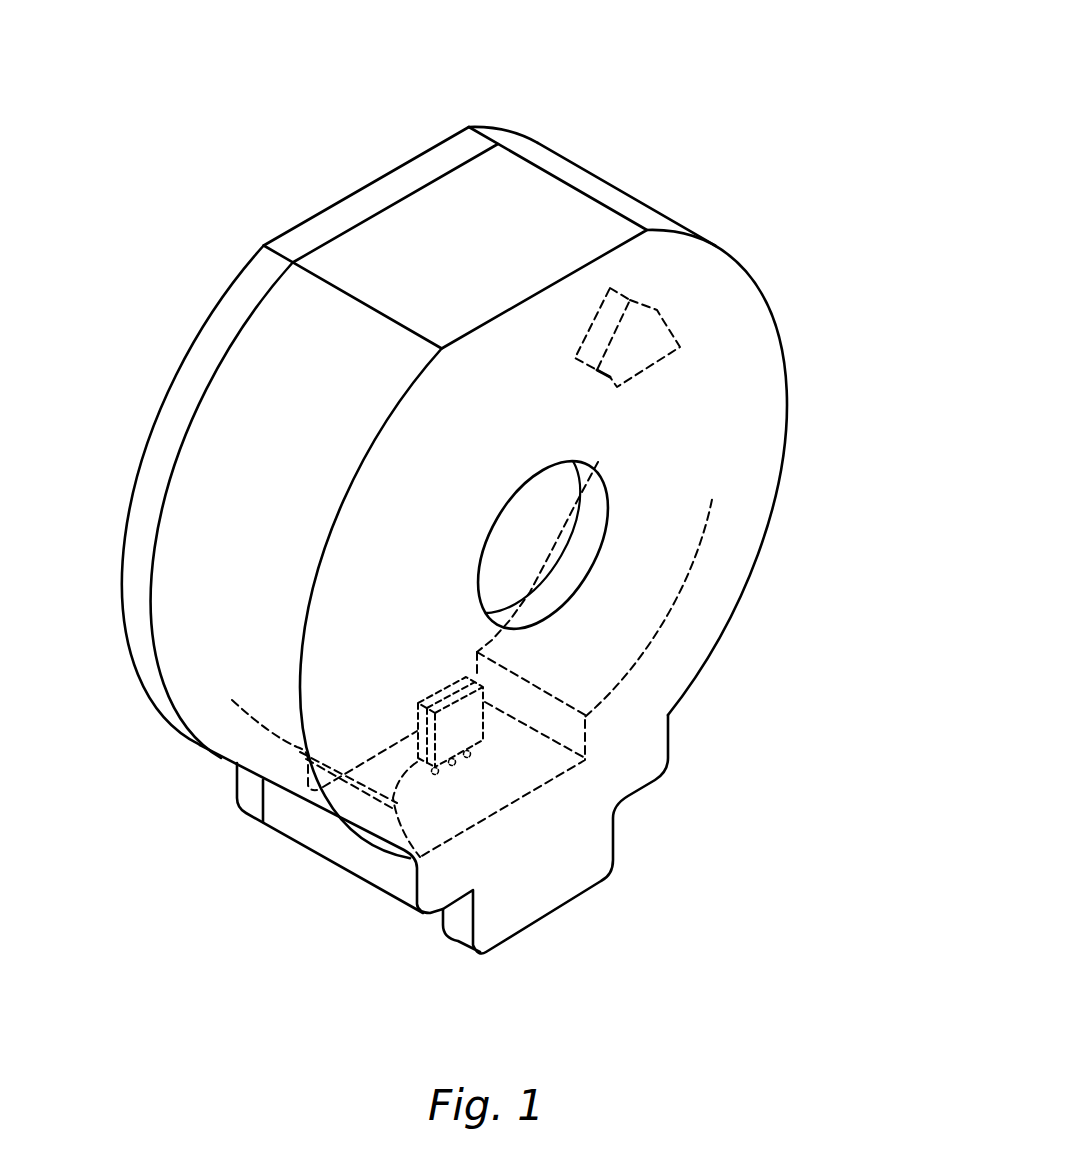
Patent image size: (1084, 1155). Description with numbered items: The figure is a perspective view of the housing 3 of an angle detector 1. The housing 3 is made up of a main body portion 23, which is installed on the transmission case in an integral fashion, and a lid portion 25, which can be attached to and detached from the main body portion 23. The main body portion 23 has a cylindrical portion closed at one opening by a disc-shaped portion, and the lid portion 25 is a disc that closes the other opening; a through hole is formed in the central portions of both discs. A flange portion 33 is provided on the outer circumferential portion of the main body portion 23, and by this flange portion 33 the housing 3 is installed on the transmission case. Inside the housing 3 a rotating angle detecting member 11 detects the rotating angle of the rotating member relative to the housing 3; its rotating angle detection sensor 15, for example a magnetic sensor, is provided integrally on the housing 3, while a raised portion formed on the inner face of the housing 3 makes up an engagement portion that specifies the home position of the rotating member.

The angle detector 1 is at (647, 76).
The housing 3 is at (467, 526).
The rotating angle detecting member 11 is at (523, 758).
The rotating angle detection sensor 15 is at (417, 762).
The main body portion 23 is at (598, 177).
The lid portion 25 is at (497, 126).
The flange portion 33 is at (548, 921).